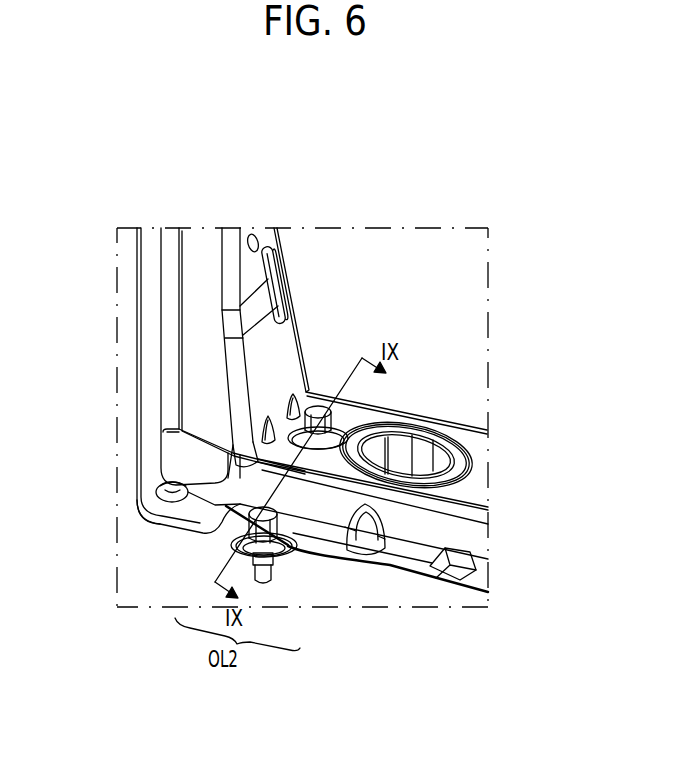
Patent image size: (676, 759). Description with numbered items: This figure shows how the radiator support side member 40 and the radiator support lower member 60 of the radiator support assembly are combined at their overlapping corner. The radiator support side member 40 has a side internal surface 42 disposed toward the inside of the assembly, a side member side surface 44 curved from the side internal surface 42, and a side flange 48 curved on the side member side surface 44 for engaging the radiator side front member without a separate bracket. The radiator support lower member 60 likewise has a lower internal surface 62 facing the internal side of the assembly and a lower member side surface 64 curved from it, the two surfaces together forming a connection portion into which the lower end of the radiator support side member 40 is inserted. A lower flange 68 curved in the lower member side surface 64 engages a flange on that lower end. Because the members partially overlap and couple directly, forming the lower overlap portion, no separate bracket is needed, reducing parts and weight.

The radiator support side member 40 is at (310, 325).
The side internal surface 42 is at (272, 371).
The side member side surface 44 is at (200, 328).
The side flange 48 is at (150, 413).
The radiator support lower member 60 is at (395, 502).
The lower internal surface 62 is at (475, 483).
The lower member side surface 64 is at (468, 532).
The lower flange 68 is at (398, 560).